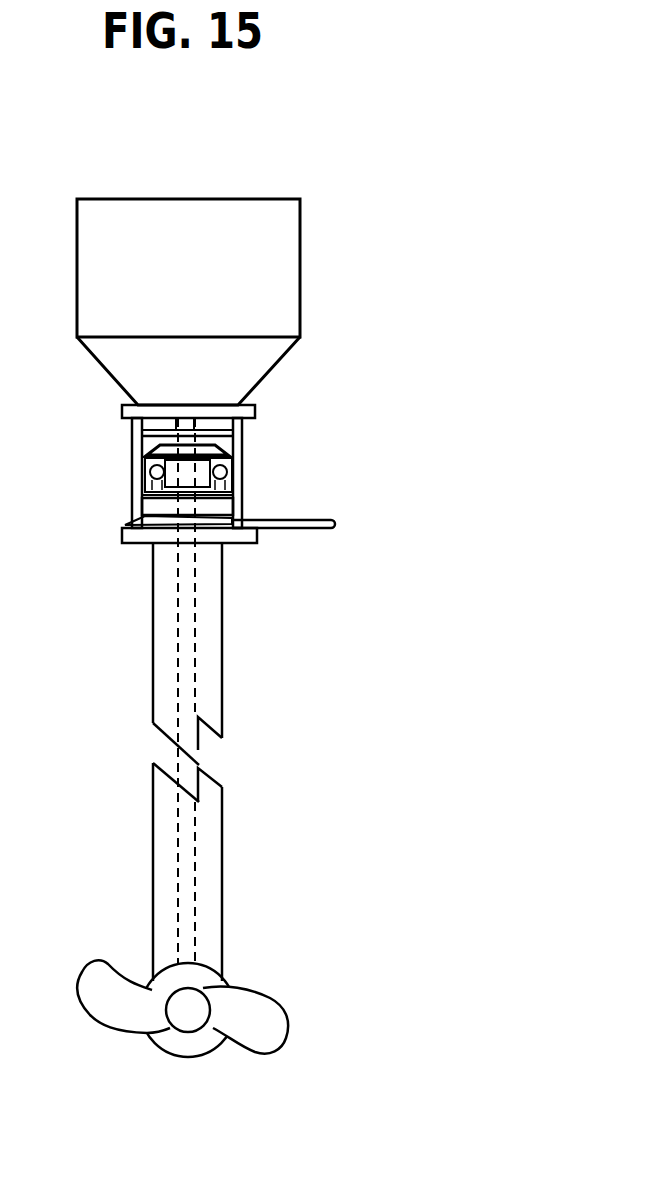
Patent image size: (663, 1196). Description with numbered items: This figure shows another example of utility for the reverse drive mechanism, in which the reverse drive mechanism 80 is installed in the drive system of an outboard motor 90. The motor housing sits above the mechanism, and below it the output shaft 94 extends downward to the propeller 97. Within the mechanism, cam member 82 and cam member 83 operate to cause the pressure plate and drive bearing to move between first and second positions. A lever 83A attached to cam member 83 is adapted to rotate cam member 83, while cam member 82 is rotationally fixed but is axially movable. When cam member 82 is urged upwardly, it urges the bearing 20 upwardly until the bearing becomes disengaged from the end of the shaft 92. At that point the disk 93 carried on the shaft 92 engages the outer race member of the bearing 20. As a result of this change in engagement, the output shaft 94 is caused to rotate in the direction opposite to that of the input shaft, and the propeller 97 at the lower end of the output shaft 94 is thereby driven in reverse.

The outboard motor 90 is at (305, 231).
The reverse drive mechanism 80 is at (248, 457).
The disk 93 is at (148, 434).
The shaft 92 is at (187, 450).
The bearing 20 is at (138, 479).
The cam member 82 is at (242, 513).
The cam member 83 is at (128, 524).
The lever 83A is at (322, 514).
The output shaft 94 is at (204, 758).
The propeller 97 is at (266, 990).